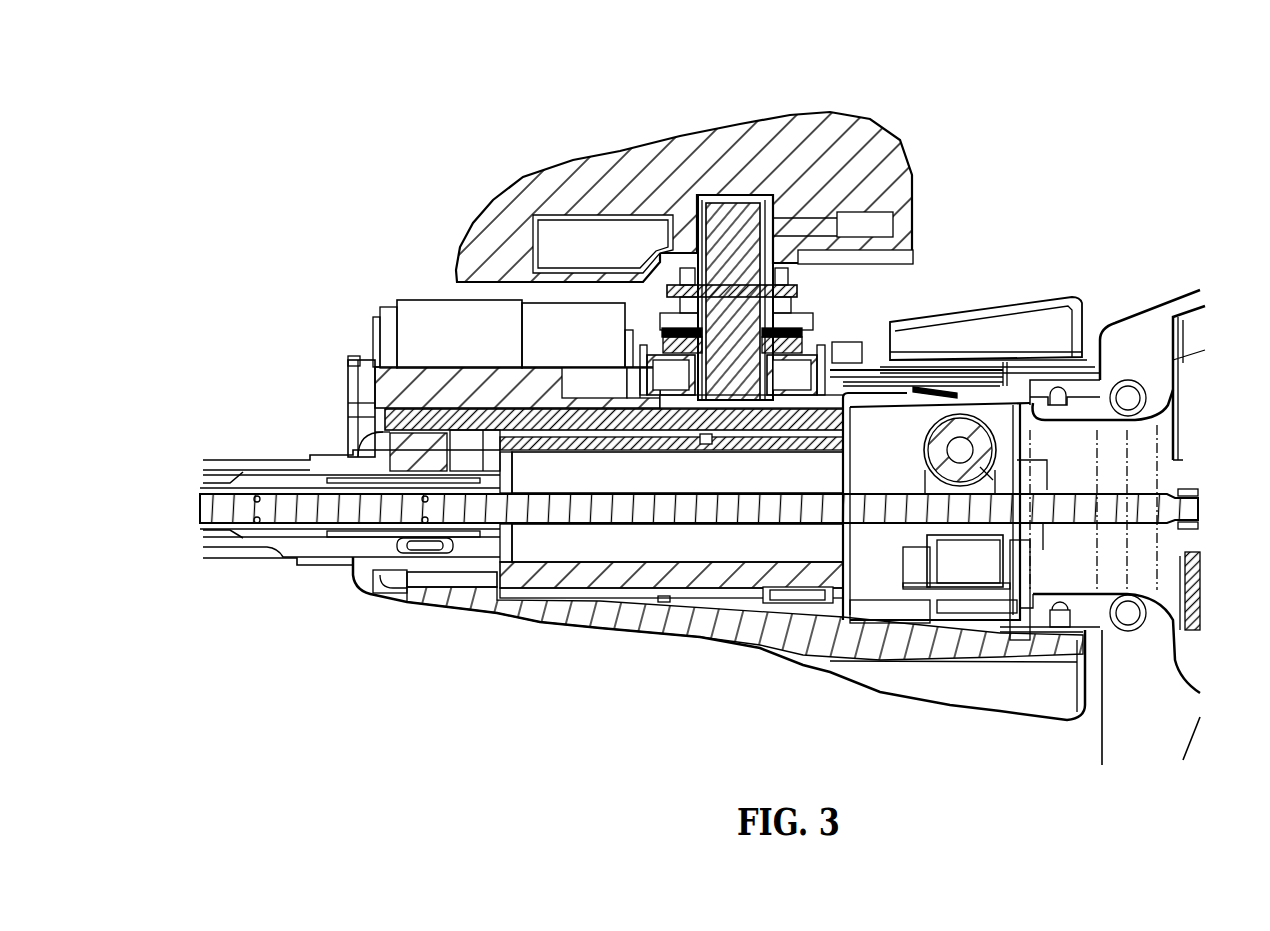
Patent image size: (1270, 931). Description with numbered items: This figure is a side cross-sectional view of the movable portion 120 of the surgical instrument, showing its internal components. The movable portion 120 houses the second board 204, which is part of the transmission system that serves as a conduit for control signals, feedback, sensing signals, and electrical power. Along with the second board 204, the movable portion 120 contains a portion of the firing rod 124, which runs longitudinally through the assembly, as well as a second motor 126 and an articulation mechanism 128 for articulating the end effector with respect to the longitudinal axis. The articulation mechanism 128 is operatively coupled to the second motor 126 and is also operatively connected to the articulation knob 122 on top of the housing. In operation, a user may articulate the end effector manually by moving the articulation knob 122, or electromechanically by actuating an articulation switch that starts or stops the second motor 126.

The movable portion 120 is at (1002, 88).
The articulation knob 122 is at (768, 122).
The firing rod 124 is at (582, 517).
The second motor 126 is at (423, 303).
The articulation mechanism 128 is at (818, 309).
The second board 204 is at (402, 418).